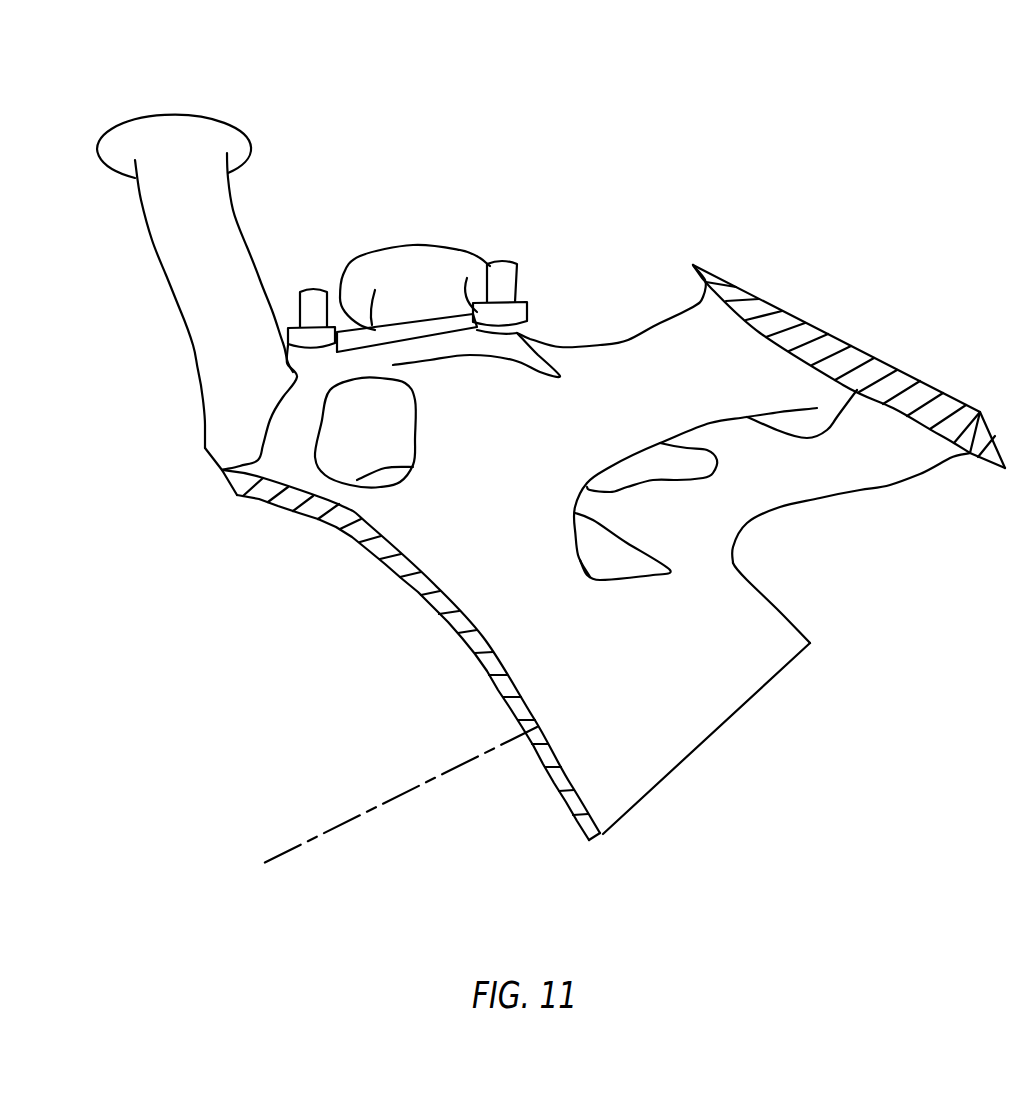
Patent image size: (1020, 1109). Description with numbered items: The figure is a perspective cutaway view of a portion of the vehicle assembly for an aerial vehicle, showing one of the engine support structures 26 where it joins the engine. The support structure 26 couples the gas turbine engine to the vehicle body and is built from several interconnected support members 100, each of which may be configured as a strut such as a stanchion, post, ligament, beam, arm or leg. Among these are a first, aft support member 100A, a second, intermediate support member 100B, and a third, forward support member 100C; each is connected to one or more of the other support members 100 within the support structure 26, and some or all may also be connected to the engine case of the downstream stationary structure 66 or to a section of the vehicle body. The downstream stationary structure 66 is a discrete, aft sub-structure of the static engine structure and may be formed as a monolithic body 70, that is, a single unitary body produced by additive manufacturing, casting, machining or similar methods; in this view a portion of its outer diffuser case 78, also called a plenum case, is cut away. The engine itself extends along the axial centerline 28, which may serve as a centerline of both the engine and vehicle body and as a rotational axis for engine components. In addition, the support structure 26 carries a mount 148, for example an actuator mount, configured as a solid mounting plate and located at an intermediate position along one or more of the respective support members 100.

The engine support structure 26 is at (141, 298).
The axial centerline 28 is at (268, 858).
The downstream stationary structure 66 is at (832, 641).
The monolithic body 70 is at (720, 165).
The outer diffuser case 78 is at (727, 727).
The support member 100 is at (660, 320).
The first support member 100A is at (418, 236).
The second support member 100B is at (143, 227).
The third support member 100C is at (200, 422).
The mount 148 is at (542, 318).